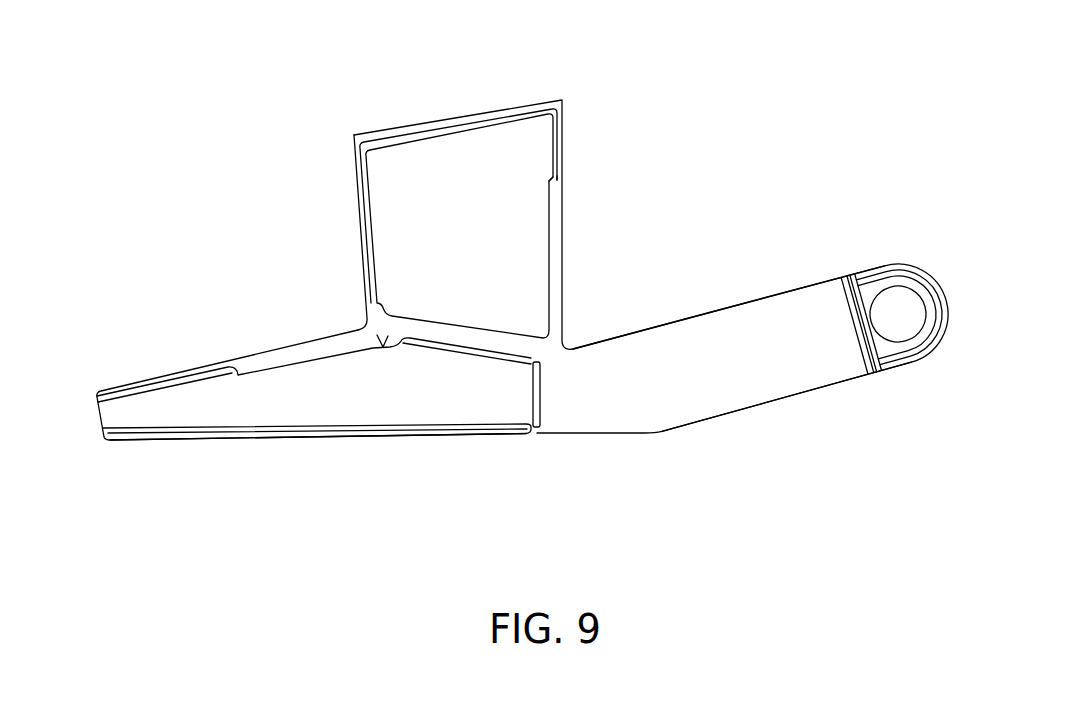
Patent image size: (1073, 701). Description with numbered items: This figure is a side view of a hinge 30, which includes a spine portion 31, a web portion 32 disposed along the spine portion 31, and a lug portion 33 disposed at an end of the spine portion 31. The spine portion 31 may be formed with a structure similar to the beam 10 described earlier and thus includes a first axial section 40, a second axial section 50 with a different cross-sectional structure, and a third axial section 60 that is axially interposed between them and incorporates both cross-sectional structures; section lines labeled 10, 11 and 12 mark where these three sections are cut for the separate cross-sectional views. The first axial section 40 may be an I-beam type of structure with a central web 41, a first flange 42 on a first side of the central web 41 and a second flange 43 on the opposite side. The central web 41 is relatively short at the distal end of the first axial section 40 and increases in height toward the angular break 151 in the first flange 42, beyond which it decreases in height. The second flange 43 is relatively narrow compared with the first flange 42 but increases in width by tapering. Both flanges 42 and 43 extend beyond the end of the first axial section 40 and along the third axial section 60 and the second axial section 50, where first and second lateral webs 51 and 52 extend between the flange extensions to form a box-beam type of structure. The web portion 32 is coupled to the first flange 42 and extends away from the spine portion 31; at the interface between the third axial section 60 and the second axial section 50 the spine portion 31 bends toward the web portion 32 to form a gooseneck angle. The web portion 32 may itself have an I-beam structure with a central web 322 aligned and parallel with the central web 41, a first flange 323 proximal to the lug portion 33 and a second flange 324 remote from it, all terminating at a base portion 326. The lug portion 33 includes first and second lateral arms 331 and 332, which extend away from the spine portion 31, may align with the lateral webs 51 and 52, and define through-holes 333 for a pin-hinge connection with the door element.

The hinge 30 is at (208, 239).
The spine portion 31 is at (97, 417).
The web portion 32 is at (458, 193).
The lug portion 33 is at (861, 324).
The first axial section 40 is at (284, 424).
The central web 41 is at (105, 447).
The first flange 42 is at (143, 380).
The second flange 43 is at (483, 437).
The second axial section 50 is at (815, 333).
The first lateral web 51 is at (742, 376).
The second lateral web 52 is at (703, 377).
The third axial section 60 is at (650, 447).
The junction rib 151 is at (362, 326).
The central web 322 is at (438, 233).
The first flange 323 is at (556, 192).
The second flange 324 is at (362, 202).
The base portion 326 is at (433, 120).
The first lateral arm 331 is at (904, 312).
The second lateral arm 332 is at (904, 312).
The through-holes 333 is at (898, 314).
The beam 10 is at (157, 490).
The section line 11- 11 is at (576, 530).
The section line 12- 12 is at (929, 451).